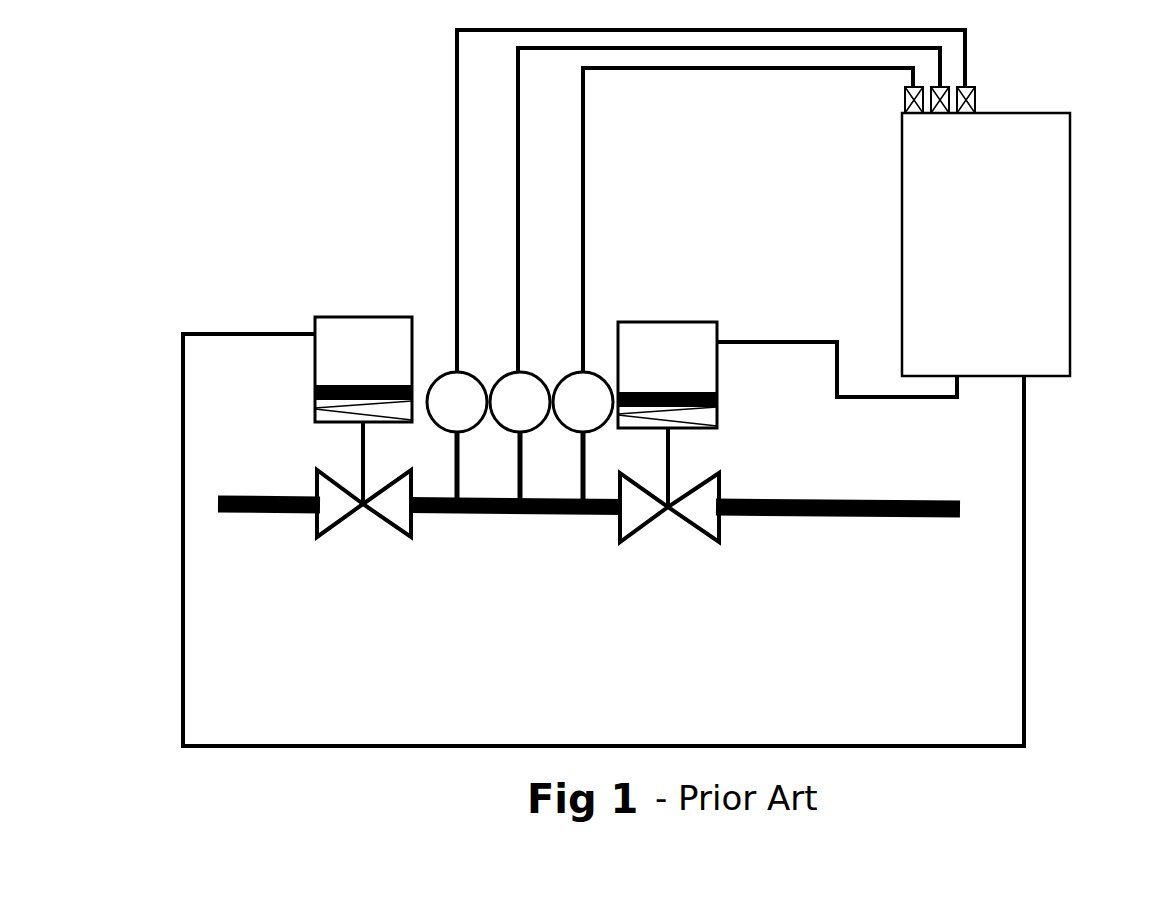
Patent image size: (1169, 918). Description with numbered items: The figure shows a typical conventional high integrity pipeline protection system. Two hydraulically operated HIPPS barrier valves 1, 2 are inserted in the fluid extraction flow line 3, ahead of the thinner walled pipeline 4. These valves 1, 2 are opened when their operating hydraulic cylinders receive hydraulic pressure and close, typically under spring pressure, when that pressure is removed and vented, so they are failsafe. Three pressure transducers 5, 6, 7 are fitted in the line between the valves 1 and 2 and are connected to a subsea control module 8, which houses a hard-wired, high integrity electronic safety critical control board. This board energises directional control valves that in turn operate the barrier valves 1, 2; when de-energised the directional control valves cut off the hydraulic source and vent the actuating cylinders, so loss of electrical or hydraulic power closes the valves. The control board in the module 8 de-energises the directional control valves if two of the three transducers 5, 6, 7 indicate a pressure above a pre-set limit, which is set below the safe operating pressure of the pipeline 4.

The HIPPS barrier valve 1 is at (363, 506).
The HIPPS barrier valve 2 is at (668, 509).
The fluid extraction flow line 3 is at (259, 513).
The pipeline 4 is at (858, 518).
The pressure transducer 5 is at (447, 378).
The pressure transducer 6 is at (510, 380).
The pressure transducer 7 is at (577, 382).
The subsea control module 8 is at (1032, 272).